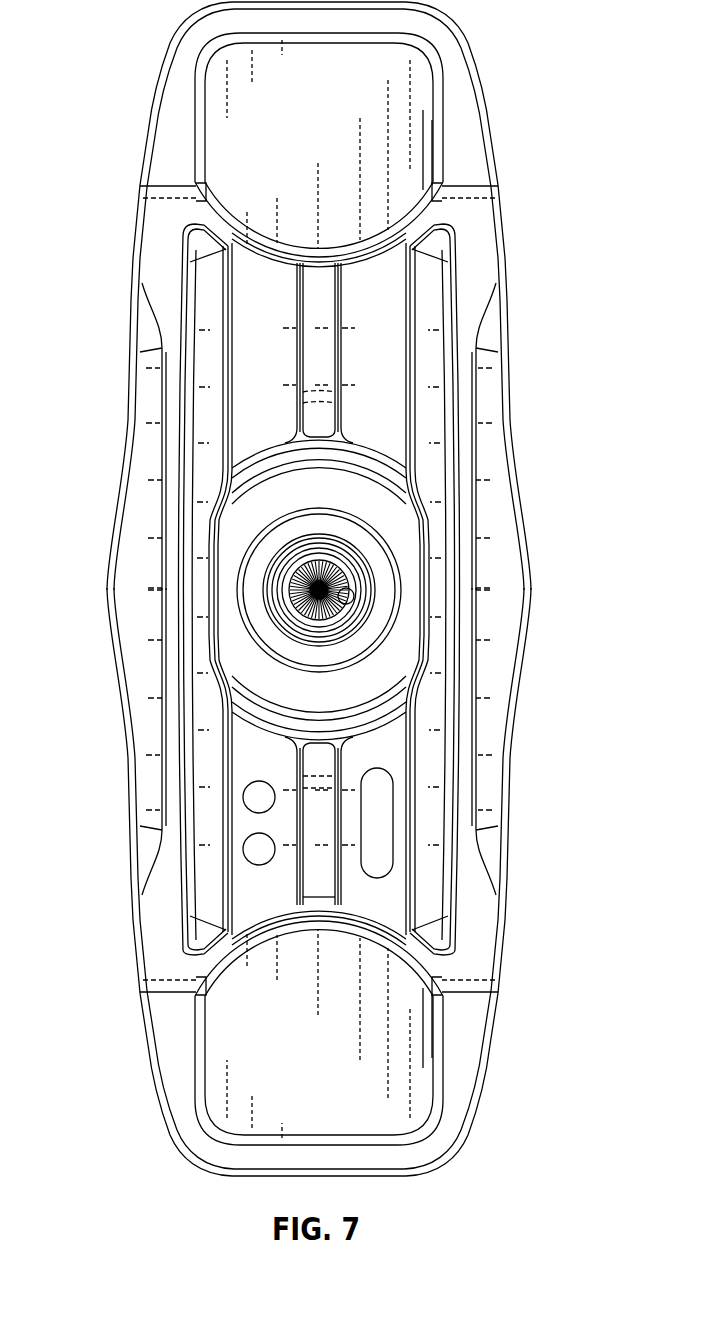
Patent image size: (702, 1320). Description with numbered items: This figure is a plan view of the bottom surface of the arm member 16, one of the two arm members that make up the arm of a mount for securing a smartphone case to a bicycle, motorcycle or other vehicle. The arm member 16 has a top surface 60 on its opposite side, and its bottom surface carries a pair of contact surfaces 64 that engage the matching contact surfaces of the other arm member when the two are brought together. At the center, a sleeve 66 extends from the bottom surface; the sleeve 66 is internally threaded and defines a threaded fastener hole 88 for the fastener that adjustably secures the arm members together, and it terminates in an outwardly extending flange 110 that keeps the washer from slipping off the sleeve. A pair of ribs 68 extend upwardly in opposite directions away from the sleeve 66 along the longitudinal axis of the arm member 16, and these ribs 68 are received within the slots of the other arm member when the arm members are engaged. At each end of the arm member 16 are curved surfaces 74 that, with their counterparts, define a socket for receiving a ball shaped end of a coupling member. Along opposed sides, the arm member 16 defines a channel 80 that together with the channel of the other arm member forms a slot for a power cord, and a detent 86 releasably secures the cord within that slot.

The arm member 16 is at (512, 440).
The top surface 60 is at (482, 214).
The contact surfaces 64 is at (200, 653).
The sleeve 66 is at (302, 568).
The ribs 68 is at (327, 347).
The curved surface 74 is at (418, 94).
The channel 80 is at (127, 570).
The detent 86 is at (107, 617).
The threaded fastener hole 88 is at (343, 583).
The flange 110 is at (360, 563).